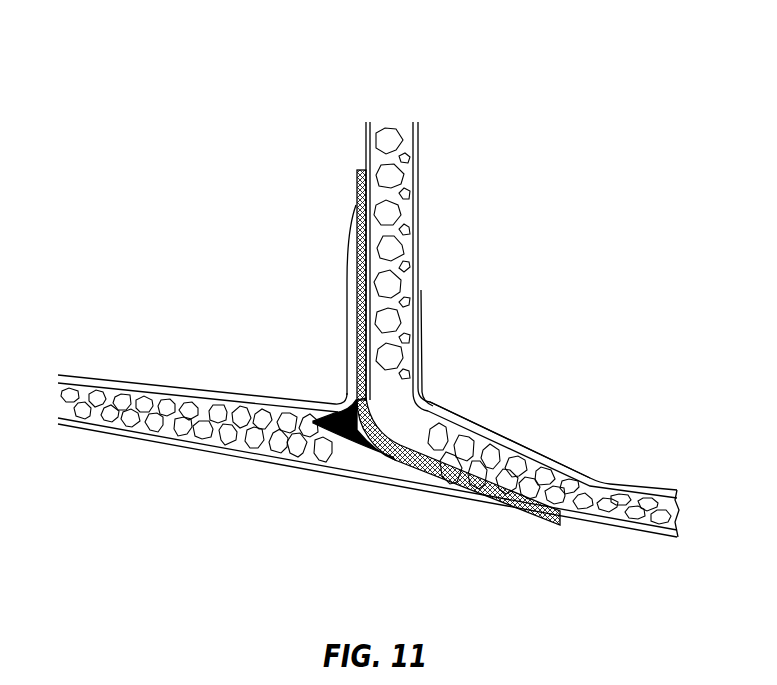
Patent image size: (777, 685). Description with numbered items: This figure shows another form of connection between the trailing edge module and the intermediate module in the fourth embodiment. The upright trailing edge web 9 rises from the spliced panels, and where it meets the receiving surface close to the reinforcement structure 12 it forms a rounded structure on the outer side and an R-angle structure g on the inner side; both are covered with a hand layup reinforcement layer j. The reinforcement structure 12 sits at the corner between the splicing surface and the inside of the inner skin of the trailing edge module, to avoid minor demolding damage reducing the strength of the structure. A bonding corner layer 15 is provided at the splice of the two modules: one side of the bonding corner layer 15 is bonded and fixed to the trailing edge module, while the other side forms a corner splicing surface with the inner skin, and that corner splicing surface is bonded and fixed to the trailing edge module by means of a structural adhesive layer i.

The trailing edge web 9 is at (393, 173).
The reinforcement structure 12 is at (345, 415).
The bonding corner layer 15 is at (258, 396).
The R-angle structure g is at (416, 398).
The hand layup reinforcement layer j is at (447, 411).
The structural adhesive layer i is at (484, 483).